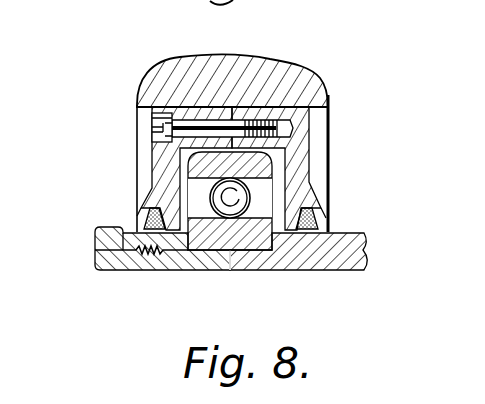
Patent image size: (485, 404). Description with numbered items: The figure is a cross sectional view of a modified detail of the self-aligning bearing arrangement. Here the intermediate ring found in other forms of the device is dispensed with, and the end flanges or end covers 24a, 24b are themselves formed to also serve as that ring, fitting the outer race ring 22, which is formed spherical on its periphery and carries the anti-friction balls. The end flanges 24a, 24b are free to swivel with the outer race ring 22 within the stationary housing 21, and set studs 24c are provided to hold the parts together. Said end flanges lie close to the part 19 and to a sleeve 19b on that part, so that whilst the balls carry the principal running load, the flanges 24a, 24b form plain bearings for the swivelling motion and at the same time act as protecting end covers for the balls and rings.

The part 19 is at (350, 258).
The sleeve 19b is at (125, 228).
The housing 21 is at (248, 60).
The outer race ring 22 is at (230, 201).
The end flange 24a is at (152, 146).
The end flange 24b is at (292, 176).
The set stud 24c is at (153, 118).